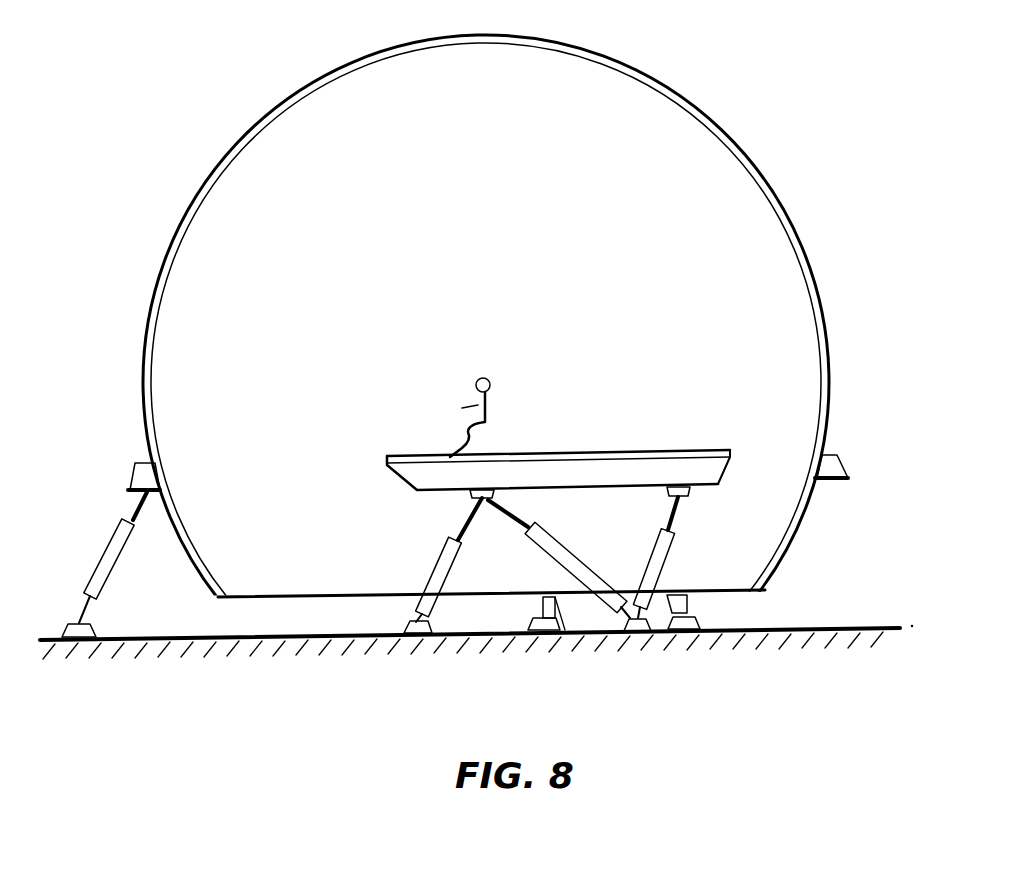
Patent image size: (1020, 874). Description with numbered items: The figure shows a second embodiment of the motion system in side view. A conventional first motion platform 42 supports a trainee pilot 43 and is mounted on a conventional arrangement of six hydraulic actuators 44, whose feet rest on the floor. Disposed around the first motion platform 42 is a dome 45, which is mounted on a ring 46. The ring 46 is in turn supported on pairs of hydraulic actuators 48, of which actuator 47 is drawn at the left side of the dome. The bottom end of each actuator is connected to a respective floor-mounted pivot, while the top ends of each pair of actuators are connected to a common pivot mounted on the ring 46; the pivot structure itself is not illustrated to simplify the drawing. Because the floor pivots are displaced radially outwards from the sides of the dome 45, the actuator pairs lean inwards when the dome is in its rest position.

The first motion platform 42 is at (585, 450).
The trainee pilot 43 is at (458, 425).
The hydraulic actuators 44 is at (440, 584).
The dome 45 is at (293, 88).
The ring 46 is at (145, 475).
The dome support cylinder 47 is at (108, 566).
The hydraulic actuators 48 is at (522, 595).